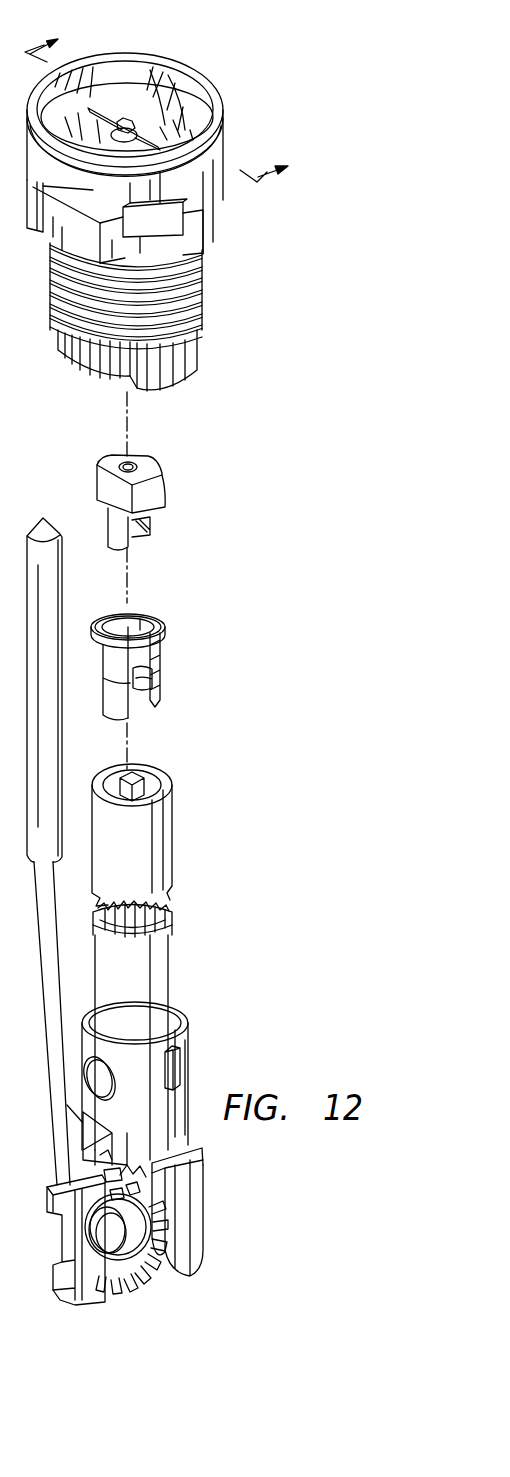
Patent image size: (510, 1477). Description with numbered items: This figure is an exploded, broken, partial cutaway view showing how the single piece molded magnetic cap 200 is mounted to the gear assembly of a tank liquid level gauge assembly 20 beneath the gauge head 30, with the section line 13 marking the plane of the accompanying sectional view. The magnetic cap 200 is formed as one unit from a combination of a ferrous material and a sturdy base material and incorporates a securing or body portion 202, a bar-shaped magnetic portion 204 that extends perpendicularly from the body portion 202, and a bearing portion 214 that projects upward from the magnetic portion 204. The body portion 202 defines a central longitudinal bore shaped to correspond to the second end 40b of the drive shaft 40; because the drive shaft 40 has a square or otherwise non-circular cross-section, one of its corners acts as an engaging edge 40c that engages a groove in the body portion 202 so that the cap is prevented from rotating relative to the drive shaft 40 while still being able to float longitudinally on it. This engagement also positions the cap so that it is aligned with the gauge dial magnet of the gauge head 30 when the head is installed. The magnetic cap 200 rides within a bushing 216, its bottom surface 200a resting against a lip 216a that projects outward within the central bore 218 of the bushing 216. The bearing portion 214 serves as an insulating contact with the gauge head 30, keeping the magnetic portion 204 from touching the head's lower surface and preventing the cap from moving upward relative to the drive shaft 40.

The section line 13- 13 is at (171, 96).
The gauge head 30 is at (231, 265).
The single piece magnetic cap 200 is at (142, 506).
The magnetic portion 204 is at (100, 488).
The bearing portion 214 is at (131, 463).
The body portion 202 is at (114, 528).
The bottom surface 200a is at (145, 535).
The bushing 216 is at (172, 642).
The central bore 218 is at (138, 613).
The lip 216a is at (146, 667).
The drive shaft 40 is at (149, 815).
The second end of drive shaft 40b is at (147, 772).
The engaging edge 40c is at (120, 775).
The tank liquid level gauge assembly 20 is at (159, 1015).